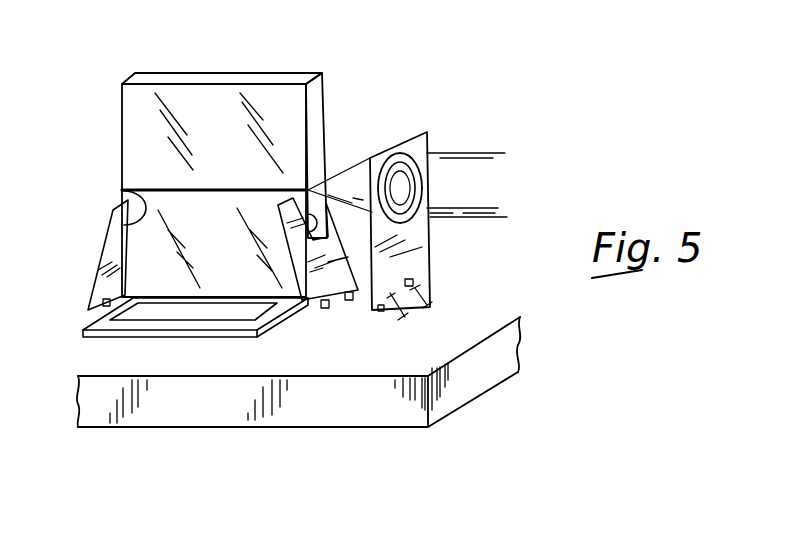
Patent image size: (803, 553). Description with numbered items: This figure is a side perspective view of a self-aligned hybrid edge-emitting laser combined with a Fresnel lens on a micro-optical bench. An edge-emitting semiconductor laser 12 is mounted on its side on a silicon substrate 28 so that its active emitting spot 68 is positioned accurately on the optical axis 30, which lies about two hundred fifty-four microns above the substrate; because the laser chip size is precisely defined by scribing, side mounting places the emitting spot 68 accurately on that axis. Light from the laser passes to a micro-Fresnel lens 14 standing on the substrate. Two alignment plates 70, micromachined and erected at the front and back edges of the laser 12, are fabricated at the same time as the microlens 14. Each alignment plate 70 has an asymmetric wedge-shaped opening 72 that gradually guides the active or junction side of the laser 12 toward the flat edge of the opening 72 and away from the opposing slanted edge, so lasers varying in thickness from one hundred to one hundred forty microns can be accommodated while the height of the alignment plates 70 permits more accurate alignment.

The edge-emitting semiconductor laser 12 is at (253, 72).
The micro-Fresnel lens 14 is at (407, 137).
The silicon substrate 28 is at (383, 407).
The optical axis 30 is at (470, 178).
The active emitting spot 68 is at (315, 180).
The alignment plates 70 is at (98, 253).
The asymmetric wedge-shaped opening 72 is at (147, 193).